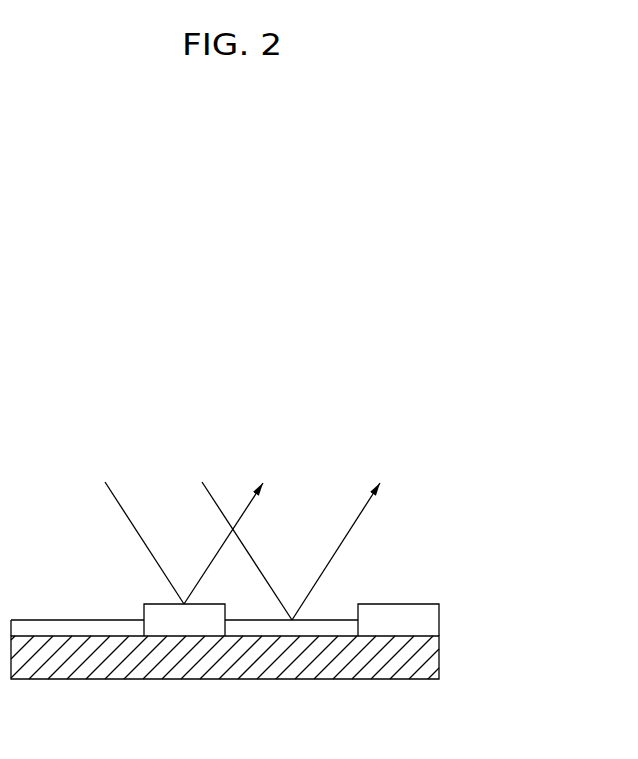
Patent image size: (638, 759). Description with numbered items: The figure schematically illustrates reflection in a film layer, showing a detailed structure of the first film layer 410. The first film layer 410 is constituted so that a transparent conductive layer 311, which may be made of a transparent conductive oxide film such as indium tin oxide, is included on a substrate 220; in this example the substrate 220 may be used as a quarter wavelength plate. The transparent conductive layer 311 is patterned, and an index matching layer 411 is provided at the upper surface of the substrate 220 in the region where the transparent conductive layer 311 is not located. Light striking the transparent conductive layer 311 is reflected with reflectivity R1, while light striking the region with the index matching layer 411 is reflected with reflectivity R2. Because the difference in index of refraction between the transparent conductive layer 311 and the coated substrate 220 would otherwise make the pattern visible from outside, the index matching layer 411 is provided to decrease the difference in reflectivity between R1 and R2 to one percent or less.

The first substrate 220 is at (430, 657).
The transparent conductive layer 311 is at (430, 613).
The first film layer 410 is at (310, 500).
The index matching layer 411 is at (330, 608).
The reflectivity R1 is at (194, 526).
The reflectivity R2 is at (301, 534).